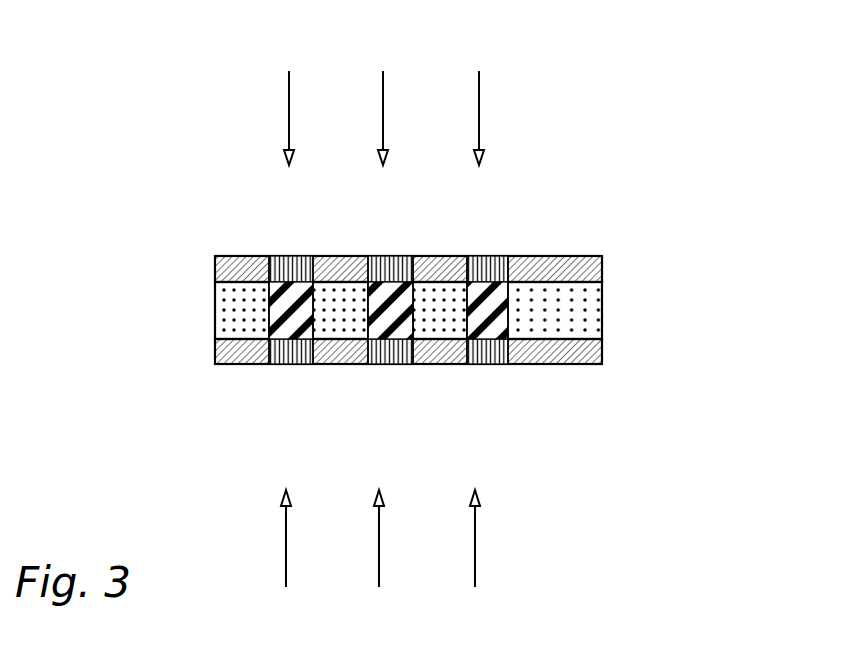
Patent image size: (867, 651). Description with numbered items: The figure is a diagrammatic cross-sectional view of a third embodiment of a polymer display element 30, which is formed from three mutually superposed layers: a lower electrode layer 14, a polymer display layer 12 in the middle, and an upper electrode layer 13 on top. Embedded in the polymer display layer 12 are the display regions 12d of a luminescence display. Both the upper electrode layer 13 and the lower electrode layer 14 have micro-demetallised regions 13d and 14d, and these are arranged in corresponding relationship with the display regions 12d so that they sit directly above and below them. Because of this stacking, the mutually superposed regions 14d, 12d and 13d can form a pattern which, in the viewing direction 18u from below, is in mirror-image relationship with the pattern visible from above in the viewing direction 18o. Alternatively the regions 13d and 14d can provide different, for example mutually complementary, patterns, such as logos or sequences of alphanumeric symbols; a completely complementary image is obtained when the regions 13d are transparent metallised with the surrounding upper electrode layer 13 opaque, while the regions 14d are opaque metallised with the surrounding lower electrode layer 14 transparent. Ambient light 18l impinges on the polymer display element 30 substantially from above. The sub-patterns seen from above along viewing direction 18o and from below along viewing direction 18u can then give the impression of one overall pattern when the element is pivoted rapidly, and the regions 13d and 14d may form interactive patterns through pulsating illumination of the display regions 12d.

The polymer display element 30 is at (519, 341).
The upper electrode layer 13 is at (602, 272).
The polymer display layer 12 is at (600, 316).
The lower electrode layer 14 is at (593, 365).
The micro-demetallised regions 13d is at (298, 256).
The display regions 12d is at (310, 318).
The micro-demetallised regions 14d is at (278, 367).
The ambient light 18l is at (289, 118).
The viewing direction from above 18o is at (383, 101).
The viewing direction from below 18u is at (379, 545).